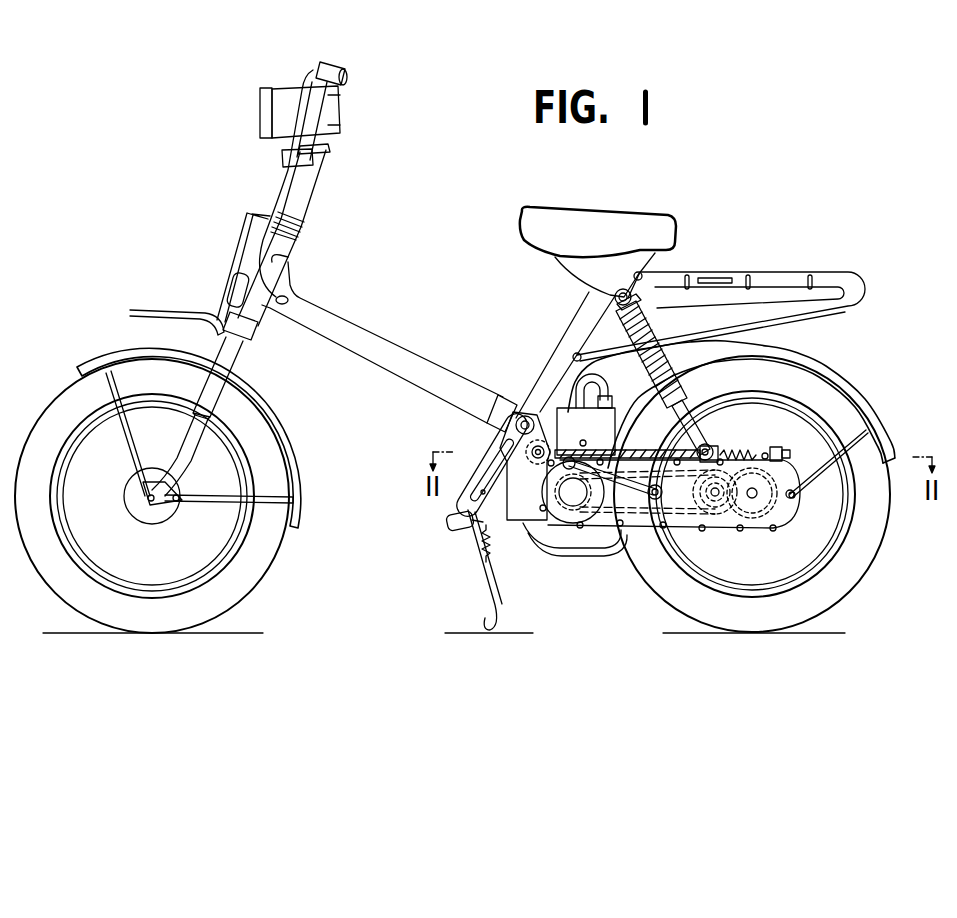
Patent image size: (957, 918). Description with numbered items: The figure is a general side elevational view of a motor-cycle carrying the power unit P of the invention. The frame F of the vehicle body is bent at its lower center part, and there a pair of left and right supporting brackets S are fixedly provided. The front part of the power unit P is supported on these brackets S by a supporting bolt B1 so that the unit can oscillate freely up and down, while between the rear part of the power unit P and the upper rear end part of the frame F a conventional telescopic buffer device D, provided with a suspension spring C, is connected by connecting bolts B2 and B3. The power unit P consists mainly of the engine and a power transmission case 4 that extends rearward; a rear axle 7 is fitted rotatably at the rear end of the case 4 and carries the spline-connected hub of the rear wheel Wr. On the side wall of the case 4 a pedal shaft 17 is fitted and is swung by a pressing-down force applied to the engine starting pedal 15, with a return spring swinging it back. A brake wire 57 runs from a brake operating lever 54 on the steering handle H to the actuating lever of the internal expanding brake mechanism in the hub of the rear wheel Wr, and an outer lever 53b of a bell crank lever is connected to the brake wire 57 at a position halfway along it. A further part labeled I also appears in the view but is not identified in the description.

The steering handle H is at (337, 62).
The brake operating lever 54 is at (341, 97).
The frame F is at (386, 350).
The supporting bracket S is at (521, 413).
The supporting bolt B1 is at (535, 461).
The connecting bolt B2 is at (621, 288).
The connecting bolt B3 is at (712, 444).
The suspension spring C is at (652, 318).
The buffer device D is at (647, 362).
The outer lever 53b is at (586, 414).
The brake wire 57 is at (655, 452).
The power transmission case 4 is at (690, 528).
The pedal shaft 17 is at (692, 518).
The rear axle 7 is at (752, 500).
The engine starting pedal 15 is at (655, 499).
The power unit P is at (568, 548).
The stand I is at (513, 522).
The rear wheel Wr is at (860, 560).